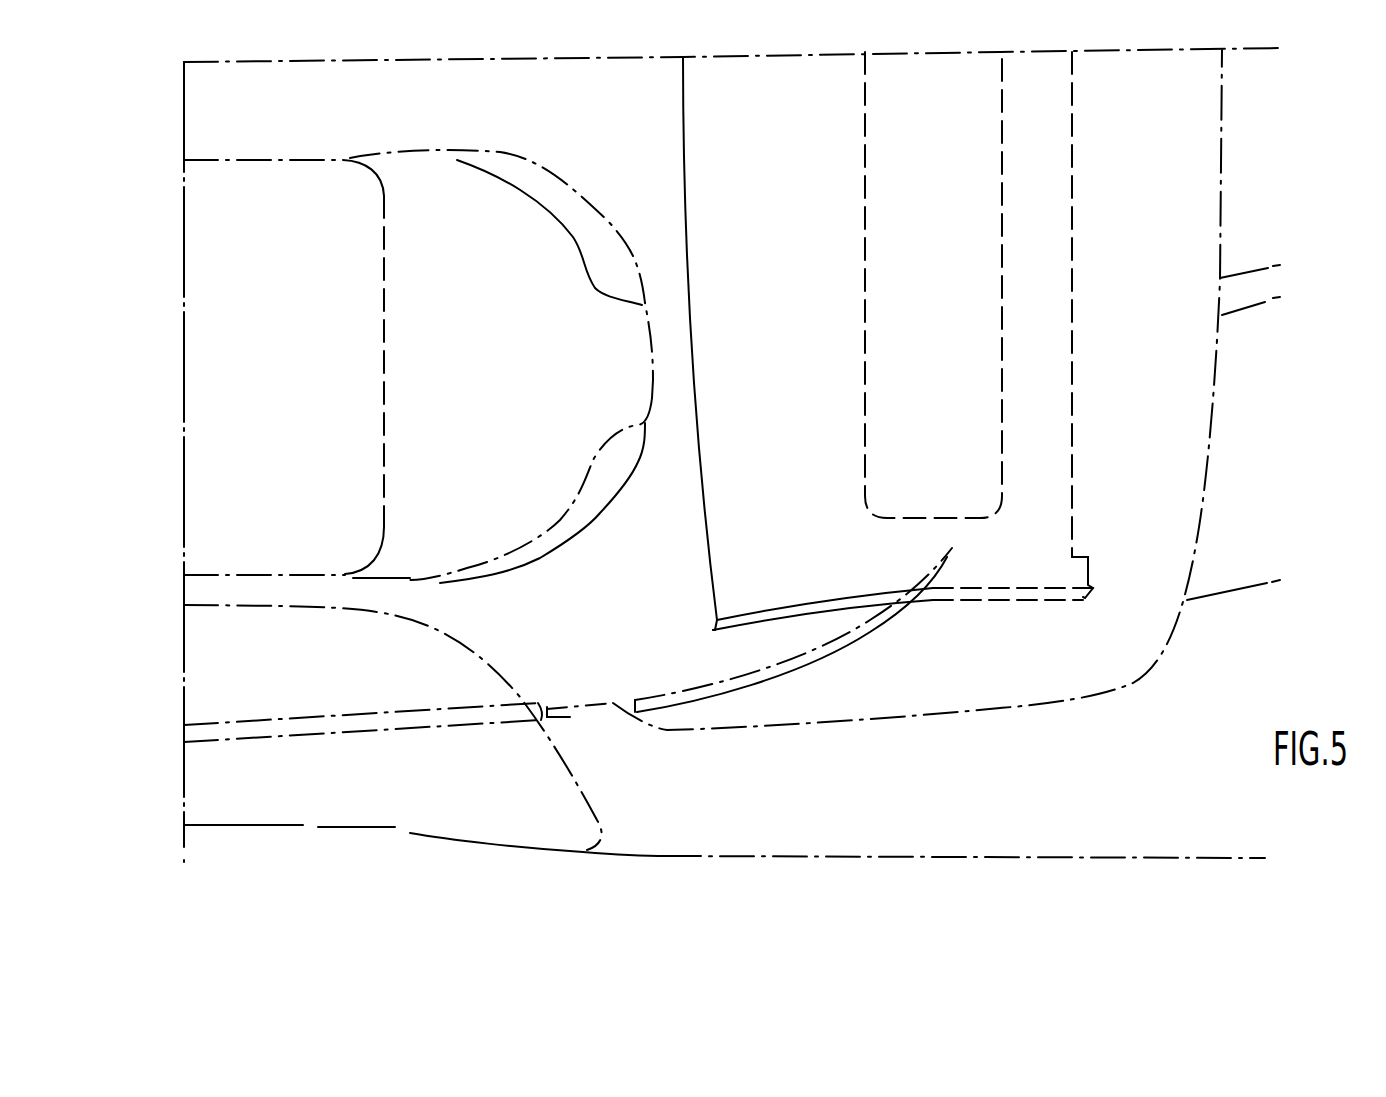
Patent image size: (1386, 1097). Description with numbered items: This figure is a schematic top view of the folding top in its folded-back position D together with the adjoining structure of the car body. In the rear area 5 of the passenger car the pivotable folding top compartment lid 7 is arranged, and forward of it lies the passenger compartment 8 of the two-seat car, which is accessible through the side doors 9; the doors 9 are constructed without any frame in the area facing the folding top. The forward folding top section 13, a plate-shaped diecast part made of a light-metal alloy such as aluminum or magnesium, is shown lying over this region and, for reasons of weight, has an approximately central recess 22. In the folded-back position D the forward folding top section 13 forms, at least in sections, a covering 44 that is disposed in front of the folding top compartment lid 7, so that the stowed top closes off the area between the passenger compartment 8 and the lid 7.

The rear area 5 is at (1243, 209).
The folding top compartment lid 7 is at (1197, 143).
The passenger compartment 8 is at (368, 334).
The side doors 9 is at (340, 836).
The forward folding top section 13 is at (708, 580).
The central recess 22 is at (912, 483).
The covering 44 is at (900, 283).
The folded-back position D is at (674, 125).